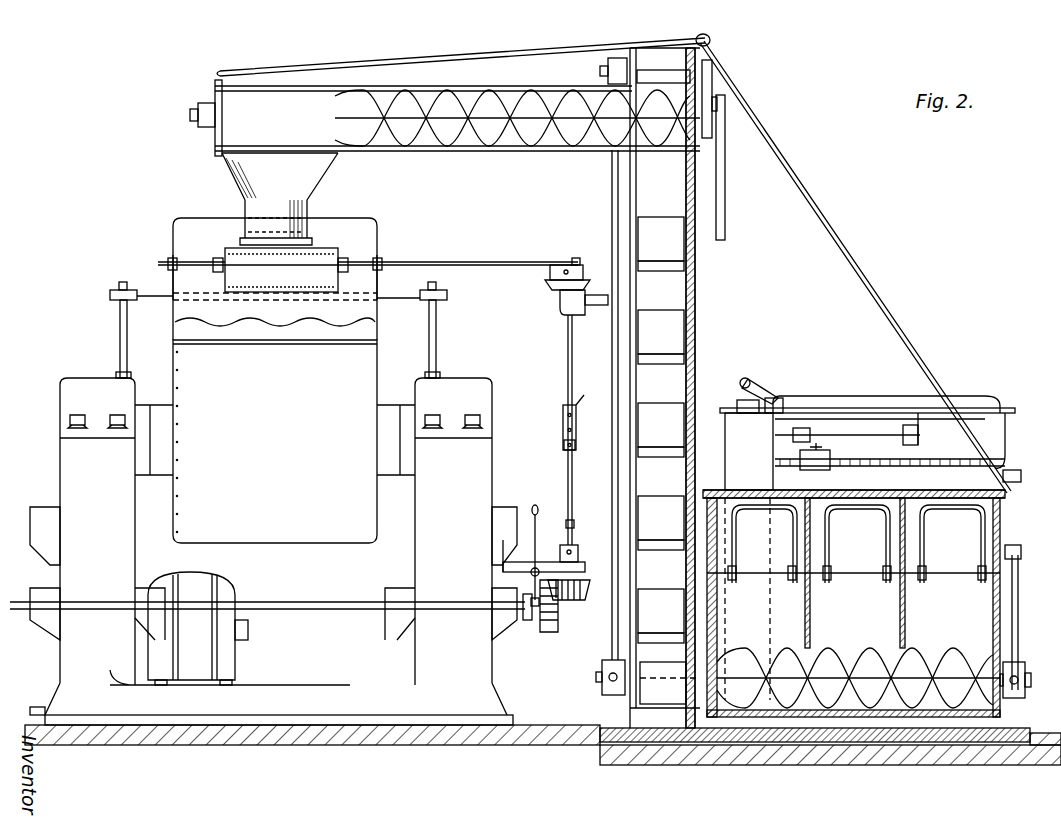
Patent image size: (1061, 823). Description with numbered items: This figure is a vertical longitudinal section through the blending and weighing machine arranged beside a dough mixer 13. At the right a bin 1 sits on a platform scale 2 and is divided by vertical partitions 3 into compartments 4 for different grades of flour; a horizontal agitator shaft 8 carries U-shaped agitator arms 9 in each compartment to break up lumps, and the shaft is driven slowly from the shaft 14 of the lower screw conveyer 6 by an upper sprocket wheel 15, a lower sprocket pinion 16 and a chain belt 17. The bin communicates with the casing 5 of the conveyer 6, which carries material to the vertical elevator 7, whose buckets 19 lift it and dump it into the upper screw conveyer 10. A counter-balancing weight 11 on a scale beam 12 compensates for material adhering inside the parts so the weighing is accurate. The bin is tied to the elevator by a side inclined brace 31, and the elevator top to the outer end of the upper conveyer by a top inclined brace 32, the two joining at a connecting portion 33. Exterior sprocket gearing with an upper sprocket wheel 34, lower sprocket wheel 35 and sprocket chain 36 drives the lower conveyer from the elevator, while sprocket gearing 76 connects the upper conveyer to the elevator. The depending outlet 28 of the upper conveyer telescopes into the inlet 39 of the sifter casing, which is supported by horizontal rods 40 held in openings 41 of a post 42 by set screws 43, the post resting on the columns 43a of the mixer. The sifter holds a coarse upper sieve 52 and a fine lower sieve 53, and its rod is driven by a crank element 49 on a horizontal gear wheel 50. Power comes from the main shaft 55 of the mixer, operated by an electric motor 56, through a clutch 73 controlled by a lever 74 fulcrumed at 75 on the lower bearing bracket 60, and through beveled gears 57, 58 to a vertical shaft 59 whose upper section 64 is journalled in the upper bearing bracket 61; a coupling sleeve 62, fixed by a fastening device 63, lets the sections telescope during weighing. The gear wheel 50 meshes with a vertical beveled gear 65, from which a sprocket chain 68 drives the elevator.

The bin 1 is at (1001, 535).
The platform scale 2 is at (742, 742).
The vertical partitions 3 is at (810, 625).
The compartments 4 is at (858, 616).
The casing 5 is at (965, 717).
The lower horizontal screw conveyer 6 is at (833, 697).
The vertical elevator 7 is at (700, 360).
The agitator shaft 8 is at (866, 575).
The agitator arms 9 is at (858, 544).
The upper screw conveyer 10 is at (530, 151).
The counter-balancing weight 11 is at (800, 428).
The scale beam 12 is at (925, 458).
The dough mixer 13 is at (275, 380).
The shaft of the screw conveyer 14 is at (1026, 680).
The upper sprocket wheel 15 is at (1021, 556).
The lower sprocket pinion 16 is at (1022, 695).
The chain belt 17 is at (1019, 625).
The buckets 19 is at (665, 388).
The depending outlet 28 is at (226, 172).
The side inclined brace 31 is at (784, 166).
The top inclined brace 32 is at (388, 66).
The connecting portion 33 is at (710, 40).
The upper sprocket wheel 34 is at (606, 70).
The lower sprocket wheel 35 is at (607, 690).
The sprocket chain 36 is at (603, 668).
The inlet 39 is at (310, 215).
The horizontal rods 40 is at (165, 263).
The openings 41 is at (110, 296).
The post 42 is at (120, 340).
The set screws 43 is at (112, 290).
The columns 43a is at (273, 546).
The crank element 49 is at (576, 258).
The horizontal gear wheel 50 is at (558, 265).
The upper sieve 52 is at (245, 255).
The lower sieve 53 is at (298, 286).
The main shaft 55 is at (348, 612).
The electric motor 56 is at (192, 645).
The beveled gear 57 is at (548, 632).
The beveled gear 58 is at (578, 602).
The vertical shaft 59 is at (571, 525).
The lower bearing bracket 60 is at (578, 550).
The upper bearing bracket 61 is at (562, 300).
The coupling sleeve 62 is at (563, 432).
The fastening device 63 is at (564, 446).
The upper section 64 is at (568, 378).
The vertical beveled gear 65 is at (576, 318).
The sprocket chain 68 is at (726, 210).
The clutch 73 is at (527, 622).
The lever 74 is at (535, 505).
The fulcrum 75 is at (503, 565).
The sprocket gearing 76 is at (722, 92).